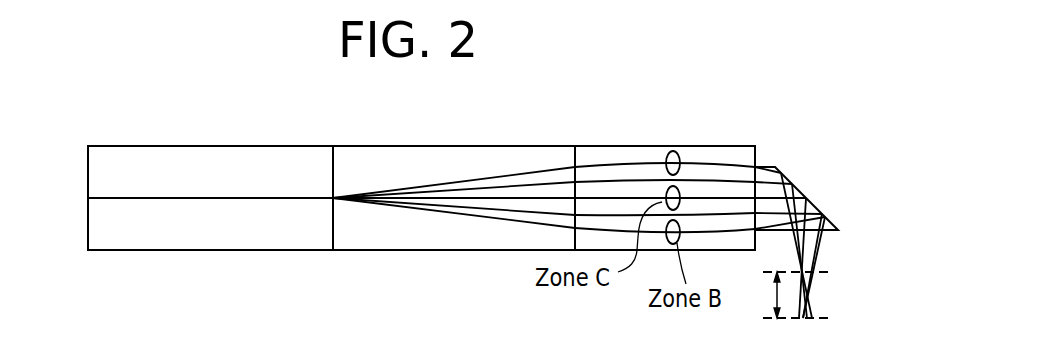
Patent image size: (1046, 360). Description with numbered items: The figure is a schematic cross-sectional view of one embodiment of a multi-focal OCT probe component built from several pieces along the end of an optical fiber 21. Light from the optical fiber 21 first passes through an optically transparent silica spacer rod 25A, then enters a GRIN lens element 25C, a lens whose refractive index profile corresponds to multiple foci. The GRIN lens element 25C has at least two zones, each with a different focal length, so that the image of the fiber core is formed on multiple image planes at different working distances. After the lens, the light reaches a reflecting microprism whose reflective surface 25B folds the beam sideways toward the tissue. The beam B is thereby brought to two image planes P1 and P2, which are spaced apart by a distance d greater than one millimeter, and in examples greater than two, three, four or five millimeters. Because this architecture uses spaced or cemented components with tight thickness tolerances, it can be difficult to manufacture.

The optical fiber 21 is at (170, 207).
The spacer rod 25A is at (383, 157).
The reflective surface 25B is at (789, 179).
The GRIN lens element 25C is at (603, 155).
The beam spots B is at (683, 156).
The image plane P1 is at (817, 273).
The image plane P2 is at (817, 324).
The distance between image planes d is at (768, 295).